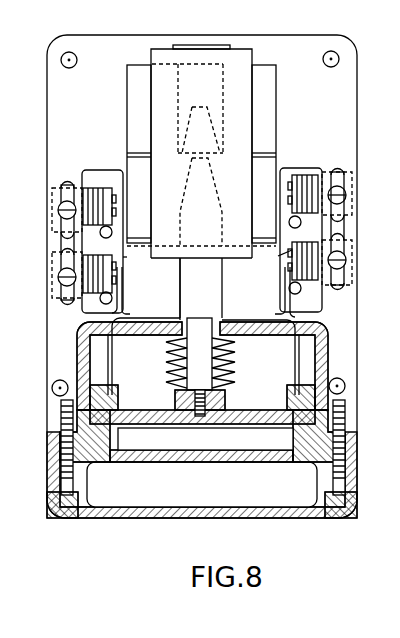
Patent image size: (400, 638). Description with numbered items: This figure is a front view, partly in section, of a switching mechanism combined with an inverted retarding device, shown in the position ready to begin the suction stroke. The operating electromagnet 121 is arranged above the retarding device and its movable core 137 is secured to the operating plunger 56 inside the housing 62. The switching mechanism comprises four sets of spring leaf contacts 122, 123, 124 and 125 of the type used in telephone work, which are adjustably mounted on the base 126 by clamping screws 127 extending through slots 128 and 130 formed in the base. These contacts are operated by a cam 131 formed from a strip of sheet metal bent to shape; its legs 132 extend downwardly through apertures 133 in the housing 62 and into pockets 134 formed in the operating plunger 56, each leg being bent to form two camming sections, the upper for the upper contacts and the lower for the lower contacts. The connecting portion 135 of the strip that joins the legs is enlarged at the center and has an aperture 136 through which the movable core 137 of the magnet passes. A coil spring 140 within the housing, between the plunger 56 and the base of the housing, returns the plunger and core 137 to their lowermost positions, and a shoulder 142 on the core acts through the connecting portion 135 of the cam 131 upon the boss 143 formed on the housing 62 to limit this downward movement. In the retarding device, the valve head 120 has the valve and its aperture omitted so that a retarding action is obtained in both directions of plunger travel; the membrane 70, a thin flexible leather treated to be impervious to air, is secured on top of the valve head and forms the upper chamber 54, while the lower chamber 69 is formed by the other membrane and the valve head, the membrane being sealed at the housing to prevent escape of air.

The upper chamber 54 is at (202, 464).
The operating plunger 56 is at (148, 390).
The housing 62 is at (328, 346).
The lower chamber 69 is at (150, 452).
The membrane 70 is at (90, 508).
The valve head 120 is at (220, 455).
The operating electromagnet 121 is at (276, 125).
The spring leaf contacts 122 is at (137, 258).
The spring leaf contacts 123 is at (103, 188).
The spring leaf contacts 124 is at (274, 258).
The spring leaf contacts 125 is at (302, 175).
The base 126 is at (357, 118).
The clamping screws 127 is at (58, 206).
The slots 128 is at (340, 232).
The slots 130 is at (75, 240).
The cam 131 is at (105, 318).
The legs 132 is at (112, 366).
The apertures 133 is at (297, 320).
The pockets 134 is at (118, 402).
The connecting portion 135 is at (165, 318).
The aperture 136 is at (201, 288).
The movable core 137 is at (180, 277).
The coil spring 140 is at (237, 350).
The shoulder 142 is at (200, 354).
The boss 143 is at (232, 320).